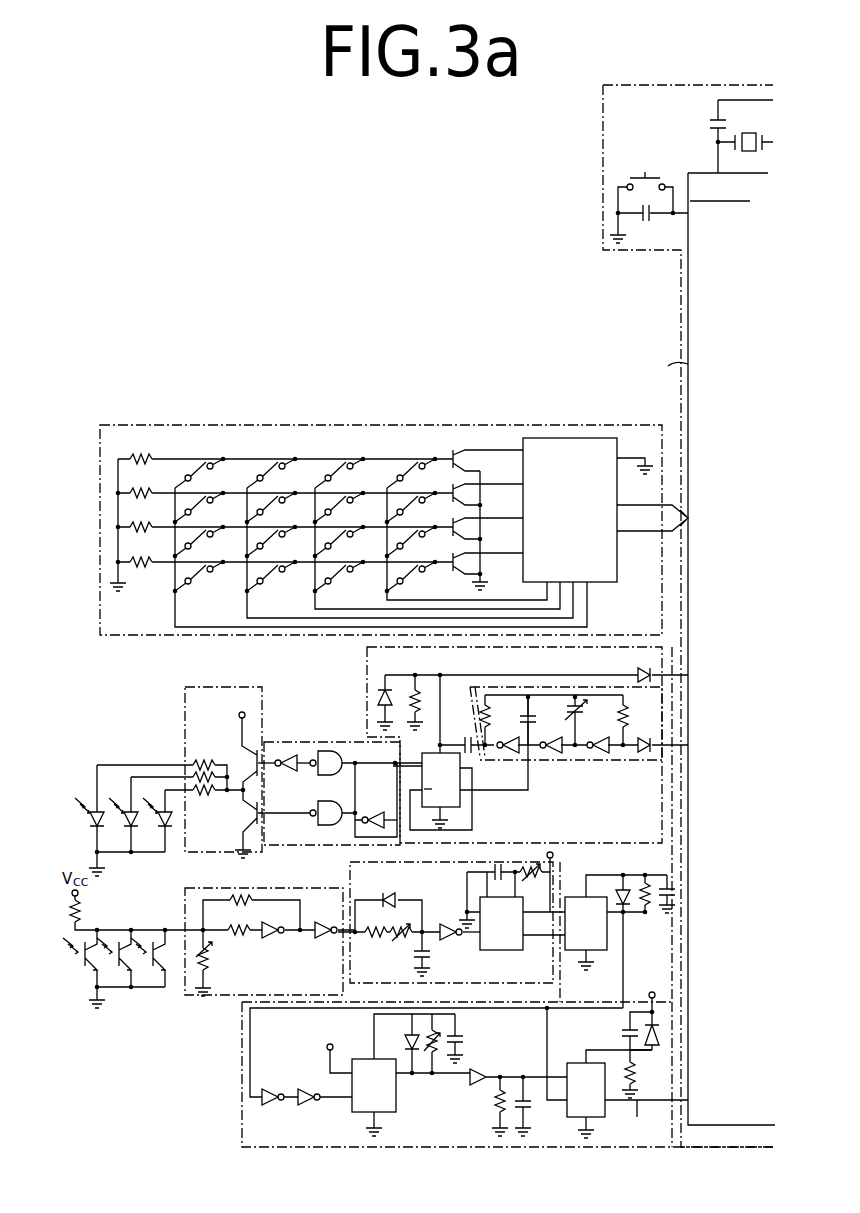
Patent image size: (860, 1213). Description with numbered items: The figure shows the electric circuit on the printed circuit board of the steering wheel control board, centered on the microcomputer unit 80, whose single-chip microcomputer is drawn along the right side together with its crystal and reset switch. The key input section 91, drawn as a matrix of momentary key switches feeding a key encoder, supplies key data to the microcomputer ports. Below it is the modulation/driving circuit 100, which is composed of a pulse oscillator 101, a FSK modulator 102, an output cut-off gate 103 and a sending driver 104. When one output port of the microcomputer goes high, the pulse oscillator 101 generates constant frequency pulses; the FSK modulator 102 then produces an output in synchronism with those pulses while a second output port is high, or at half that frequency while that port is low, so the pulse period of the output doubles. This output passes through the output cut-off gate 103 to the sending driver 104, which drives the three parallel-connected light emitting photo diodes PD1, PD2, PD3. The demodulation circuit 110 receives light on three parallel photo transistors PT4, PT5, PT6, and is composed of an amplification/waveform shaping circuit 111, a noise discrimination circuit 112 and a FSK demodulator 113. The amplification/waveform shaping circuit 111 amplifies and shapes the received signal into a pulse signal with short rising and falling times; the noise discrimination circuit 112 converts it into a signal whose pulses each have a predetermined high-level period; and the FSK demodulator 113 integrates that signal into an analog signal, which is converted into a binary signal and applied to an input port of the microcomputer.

The microcomputer unit 80 is at (601, 126).
The key input section 91 is at (434, 421).
The modulation/driving circuit 100 is at (348, 704).
The pulse oscillator 101 is at (576, 762).
The FSK modulator 102 is at (364, 650).
The output cut-off gate 103 is at (320, 741).
The sending driver 104 is at (185, 688).
The demodulation circuit 110 is at (306, 882).
The amplification/waveform shaping circuit 111 is at (227, 998).
The noise discrimination circuit 112 is at (350, 868).
The FSK demodulator 113 is at (242, 1090).
The photo diode PD1 is at (85, 832).
The photo diode PD2 is at (131, 845).
The photo diode PD3 is at (165, 836).
The photo transistor PT4 is at (85, 975).
The photo transistor PT5 is at (121, 985).
The photo transistor PT6 is at (155, 982).